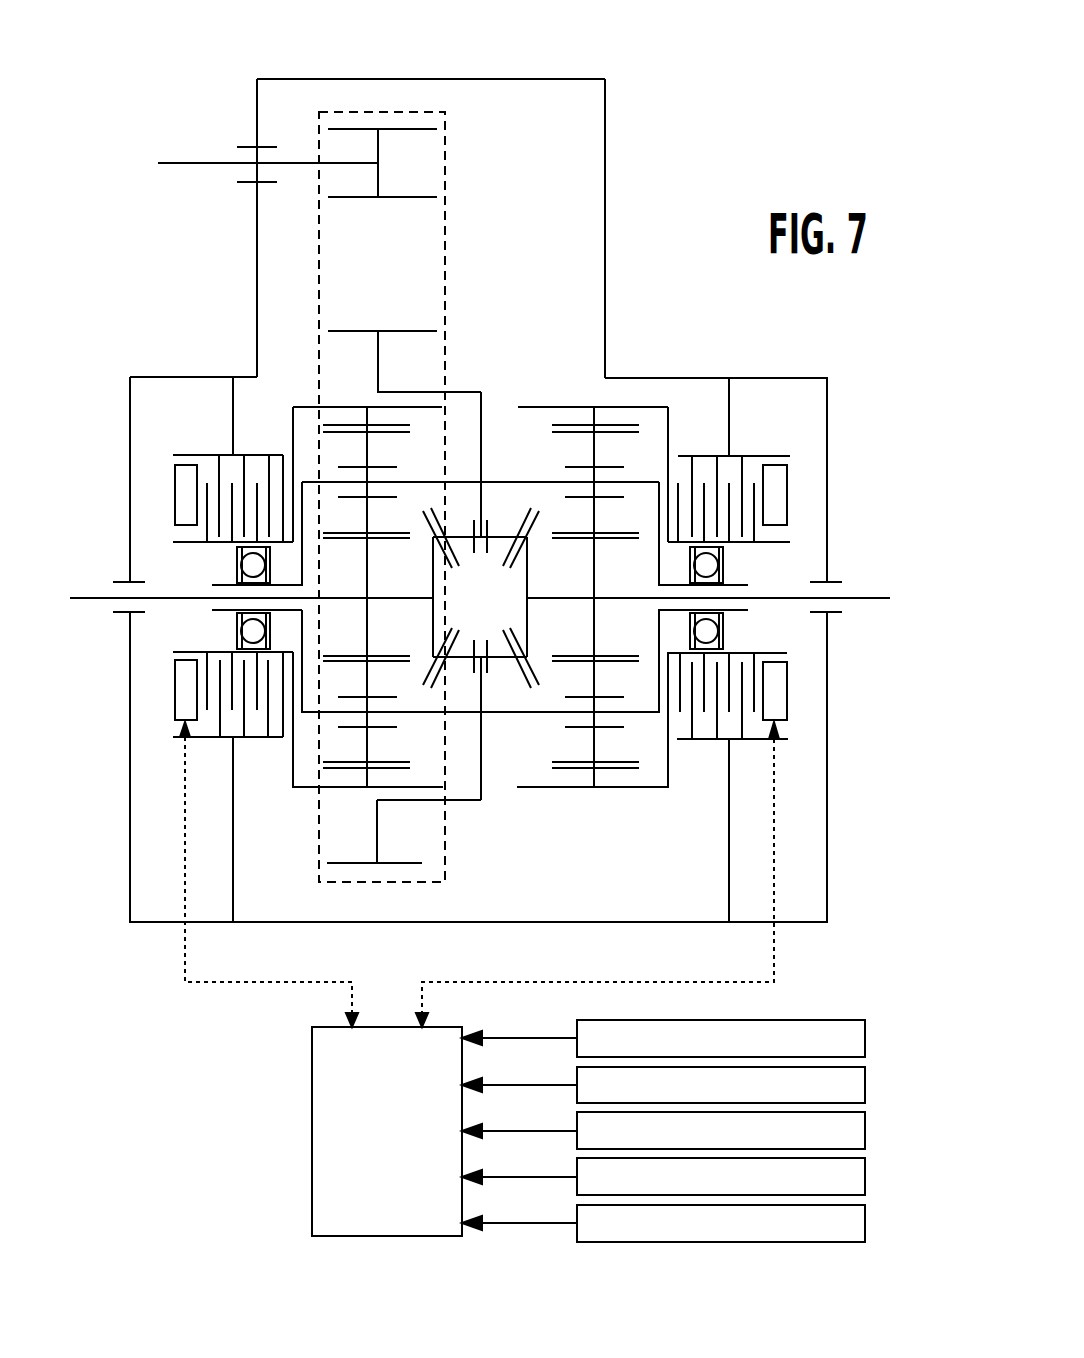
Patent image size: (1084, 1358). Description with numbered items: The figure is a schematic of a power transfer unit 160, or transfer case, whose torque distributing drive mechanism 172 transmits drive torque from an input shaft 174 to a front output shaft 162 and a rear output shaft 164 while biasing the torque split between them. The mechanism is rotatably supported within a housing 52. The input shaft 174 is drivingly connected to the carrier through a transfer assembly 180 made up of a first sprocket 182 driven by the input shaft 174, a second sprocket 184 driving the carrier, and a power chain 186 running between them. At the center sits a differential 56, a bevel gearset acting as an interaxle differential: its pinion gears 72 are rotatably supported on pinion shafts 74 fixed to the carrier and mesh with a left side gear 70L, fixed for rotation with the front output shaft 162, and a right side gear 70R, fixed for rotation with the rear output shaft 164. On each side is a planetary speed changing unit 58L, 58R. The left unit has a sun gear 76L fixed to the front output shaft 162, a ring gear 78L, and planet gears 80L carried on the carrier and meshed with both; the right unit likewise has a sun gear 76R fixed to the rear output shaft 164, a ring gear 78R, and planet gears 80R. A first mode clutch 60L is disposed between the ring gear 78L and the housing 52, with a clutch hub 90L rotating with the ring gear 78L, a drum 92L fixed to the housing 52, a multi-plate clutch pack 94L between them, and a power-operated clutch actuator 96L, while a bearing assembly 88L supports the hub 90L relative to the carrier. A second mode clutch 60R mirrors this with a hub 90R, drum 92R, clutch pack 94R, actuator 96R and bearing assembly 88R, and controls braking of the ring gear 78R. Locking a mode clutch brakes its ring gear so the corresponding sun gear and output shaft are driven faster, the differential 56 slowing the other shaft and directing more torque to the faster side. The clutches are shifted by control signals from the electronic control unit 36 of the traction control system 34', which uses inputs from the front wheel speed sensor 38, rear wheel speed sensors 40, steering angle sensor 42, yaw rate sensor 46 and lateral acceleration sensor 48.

The power transfer unit 160 is at (678, 12).
The torque distributing drive mechanism 172 is at (577, 364).
The input shaft 174 is at (188, 162).
The transfer assembly 180 is at (457, 270).
The first sprocket 182 is at (403, 198).
The second sprocket 184 is at (422, 865).
The power chain 186 is at (447, 151).
The housing 52 is at (830, 410).
The differential 56 is at (503, 532).
The pinion gears 72 is at (452, 657).
The pinion shafts 74 is at (481, 490).
The left side gear 70L is at (432, 620).
The right side gear 70R is at (527, 568).
The sun gear 76L is at (367, 563).
The sun gear 76R is at (594, 555).
The ring gear 78L is at (432, 410).
The ring gear 78R is at (537, 787).
The planet gears 80L is at (368, 444).
The planet gears 80R is at (594, 678).
The left speed changing unit 58L is at (348, 777).
The right speed changing unit 58R is at (638, 773).
The first mode clutch 60L is at (165, 498).
The second mode clutch 60R is at (788, 493).
The bearing assembly 88L is at (237, 630).
The bearing assembly 88R is at (723, 631).
The clutch hub 90L is at (193, 543).
The clutch hub 90R is at (765, 545).
The drum 92L is at (233, 408).
The drum 92R is at (729, 415).
The multi-plate clutch pack 94L is at (250, 718).
The multi-plate clutch pack 94R is at (714, 720).
The power-operated clutch actuator 96L is at (175, 690).
The power-operated clutch actuator 96R is at (787, 693).
The front output shaft 162 is at (80, 596).
The rear output shaft 164 is at (865, 597).
The electronic control unit 36 is at (327, 1058).
The traction control system 34' is at (371, 1137).
The front wheel speed sensor 38 is at (868, 1028).
The rear wheel speed sensors 40 is at (868, 1075).
The steering angle sensor 42 is at (868, 1121).
The yaw rate sensor 46 is at (868, 1167).
The lateral acceleration sensor 48 is at (868, 1213).